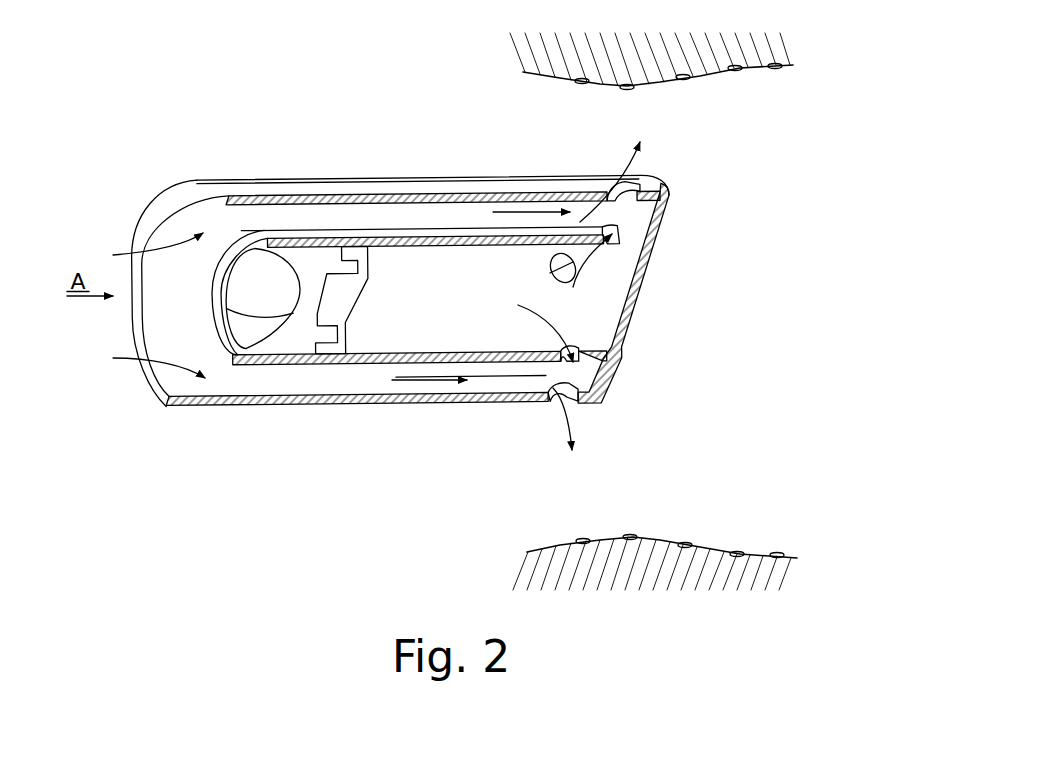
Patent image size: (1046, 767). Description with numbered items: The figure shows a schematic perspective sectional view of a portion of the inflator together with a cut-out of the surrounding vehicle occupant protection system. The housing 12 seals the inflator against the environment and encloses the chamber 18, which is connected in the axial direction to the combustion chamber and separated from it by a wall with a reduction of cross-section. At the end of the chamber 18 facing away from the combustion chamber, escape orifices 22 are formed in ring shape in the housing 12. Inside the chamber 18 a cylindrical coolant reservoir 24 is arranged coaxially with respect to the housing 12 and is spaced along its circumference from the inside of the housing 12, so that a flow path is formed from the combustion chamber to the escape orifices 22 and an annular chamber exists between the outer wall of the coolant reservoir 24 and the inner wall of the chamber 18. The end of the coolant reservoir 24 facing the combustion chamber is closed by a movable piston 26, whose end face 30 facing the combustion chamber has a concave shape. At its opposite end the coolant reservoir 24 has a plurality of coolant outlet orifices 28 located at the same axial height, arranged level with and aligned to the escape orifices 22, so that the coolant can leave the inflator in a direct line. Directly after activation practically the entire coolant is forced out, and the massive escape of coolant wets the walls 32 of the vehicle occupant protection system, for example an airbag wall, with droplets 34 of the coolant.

The housing 12 is at (400, 200).
The chamber 18 is at (310, 382).
The escape orifices 22 is at (646, 178).
The coolant reservoir 24 is at (470, 323).
The movable piston 26 is at (311, 270).
The coolant outlet orifices 28 is at (628, 262).
The end face 30 is at (267, 297).
The wall 32 is at (535, 52).
The droplets 34 is at (580, 83).